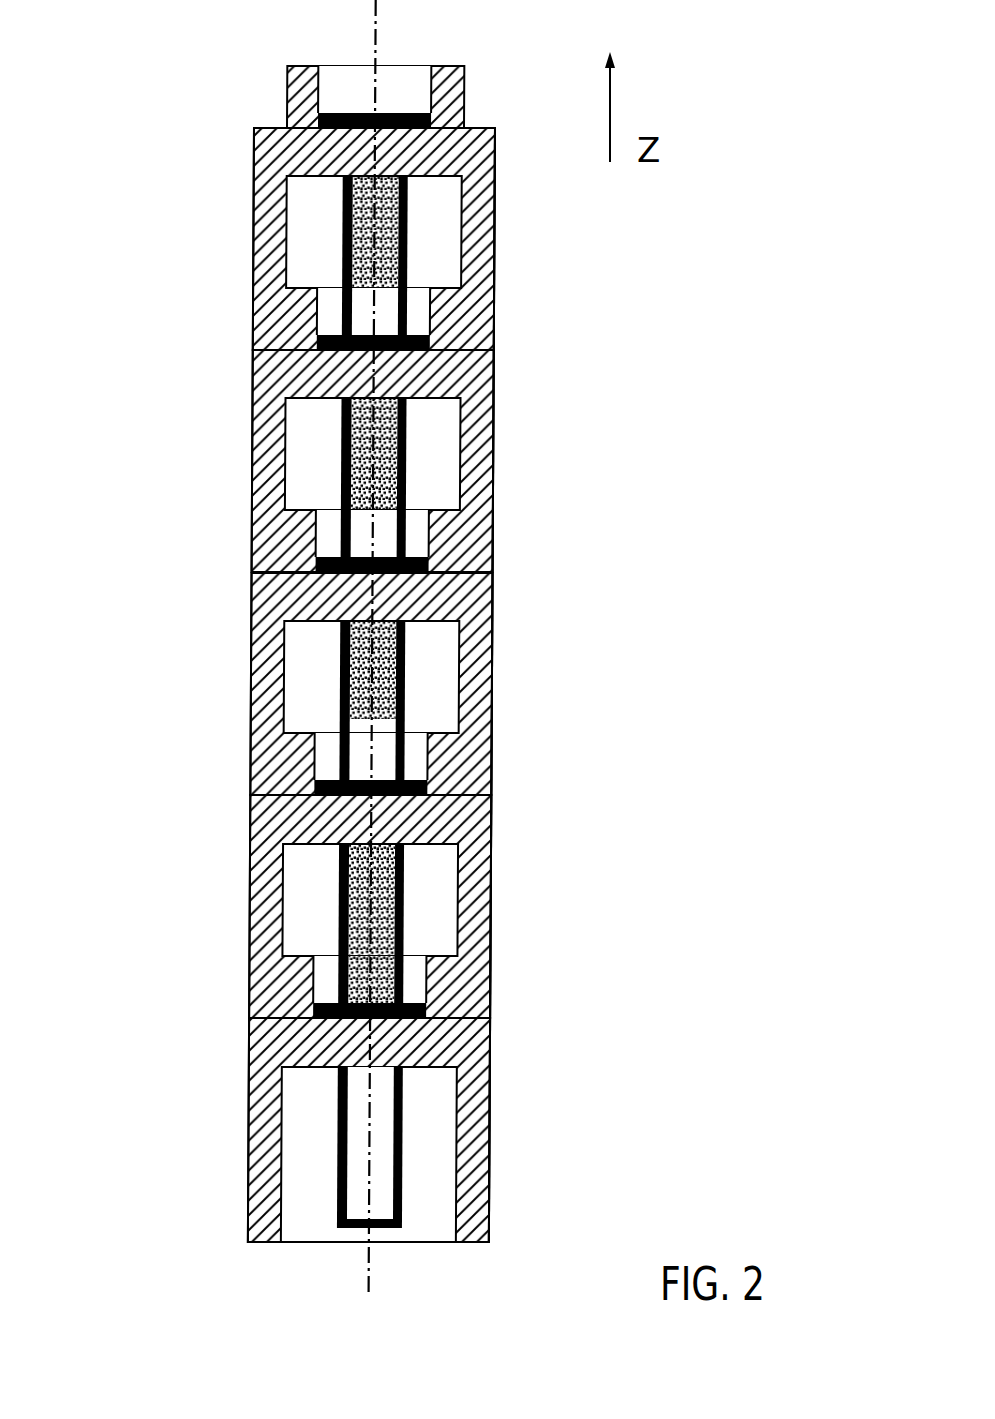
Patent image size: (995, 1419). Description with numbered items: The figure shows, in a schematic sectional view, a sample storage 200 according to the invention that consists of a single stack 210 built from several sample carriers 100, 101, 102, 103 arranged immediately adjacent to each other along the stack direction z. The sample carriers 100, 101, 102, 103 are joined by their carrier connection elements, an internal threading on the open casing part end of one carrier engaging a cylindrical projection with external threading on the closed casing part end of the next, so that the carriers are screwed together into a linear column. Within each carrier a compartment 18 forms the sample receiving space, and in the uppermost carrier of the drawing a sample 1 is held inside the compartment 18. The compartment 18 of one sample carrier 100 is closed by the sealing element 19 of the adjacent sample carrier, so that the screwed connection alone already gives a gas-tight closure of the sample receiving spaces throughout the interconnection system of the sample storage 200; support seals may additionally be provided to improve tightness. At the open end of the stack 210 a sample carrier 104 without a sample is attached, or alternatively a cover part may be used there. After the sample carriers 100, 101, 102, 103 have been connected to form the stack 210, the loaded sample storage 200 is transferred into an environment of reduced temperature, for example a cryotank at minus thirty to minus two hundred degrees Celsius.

The sample storage 200 is at (93, 165).
The stack 210 is at (493, 557).
The sample carrier 100 is at (358, 249).
The sample carrier 101 is at (253, 497).
The sample carrier 102 is at (252, 700).
The sample carrier 103 is at (250, 895).
The sample carrier without a sample 104 is at (250, 1126).
The sample material 1 is at (373, 205).
The compartment 18 is at (408, 267).
The sealing element 19 is at (433, 343).